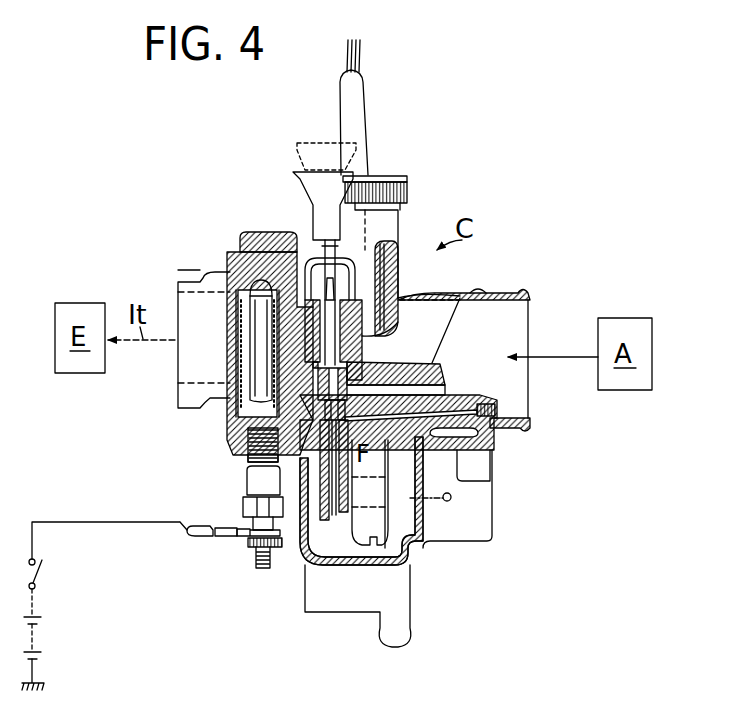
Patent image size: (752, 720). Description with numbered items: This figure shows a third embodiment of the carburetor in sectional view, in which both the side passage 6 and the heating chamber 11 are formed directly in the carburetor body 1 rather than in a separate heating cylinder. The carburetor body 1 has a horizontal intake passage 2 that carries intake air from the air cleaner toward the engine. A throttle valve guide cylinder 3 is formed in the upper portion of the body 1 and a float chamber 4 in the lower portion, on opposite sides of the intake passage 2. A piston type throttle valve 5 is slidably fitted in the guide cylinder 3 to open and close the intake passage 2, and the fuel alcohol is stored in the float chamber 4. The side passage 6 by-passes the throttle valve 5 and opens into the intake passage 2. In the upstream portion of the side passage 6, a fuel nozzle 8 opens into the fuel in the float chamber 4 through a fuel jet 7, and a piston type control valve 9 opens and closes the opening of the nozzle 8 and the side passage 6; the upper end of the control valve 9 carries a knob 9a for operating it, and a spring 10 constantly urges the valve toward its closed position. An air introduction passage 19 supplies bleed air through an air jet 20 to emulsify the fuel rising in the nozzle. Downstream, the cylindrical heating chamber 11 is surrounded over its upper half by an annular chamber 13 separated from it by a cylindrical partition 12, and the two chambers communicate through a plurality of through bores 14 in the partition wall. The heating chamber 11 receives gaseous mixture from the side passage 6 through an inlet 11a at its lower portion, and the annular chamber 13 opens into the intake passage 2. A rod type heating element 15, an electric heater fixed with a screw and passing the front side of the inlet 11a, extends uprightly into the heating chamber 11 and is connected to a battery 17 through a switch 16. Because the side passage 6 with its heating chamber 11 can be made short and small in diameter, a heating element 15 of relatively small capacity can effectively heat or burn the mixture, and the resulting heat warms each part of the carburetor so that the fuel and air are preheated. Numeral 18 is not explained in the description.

The carburetor body 1 is at (183, 272).
The intake passage 2 is at (518, 304).
The throttle valve guide cylinder 3 is at (380, 221).
The float chamber 4 is at (424, 511).
The throttle valve 5 is at (386, 280).
The side passage 6 is at (440, 382).
The fuel jet 7 is at (332, 513).
The fuel nozzle 8 is at (339, 400).
The control valve 9 is at (346, 372).
The knob 9a is at (299, 170).
The spring 10 is at (343, 340).
The heating chamber 11 is at (276, 368).
The inlet 11a is at (280, 393).
The cylindrical partition 12 is at (280, 340).
The annular chamber 13 is at (237, 342).
The through bores 14 is at (236, 326).
The heating element 15 is at (262, 378).
The switch 16 is at (40, 577).
The battery 17 is at (38, 632).
The cap 18 is at (271, 236).
The air introduction passage 19 is at (428, 432).
The air jet 20 is at (485, 406).